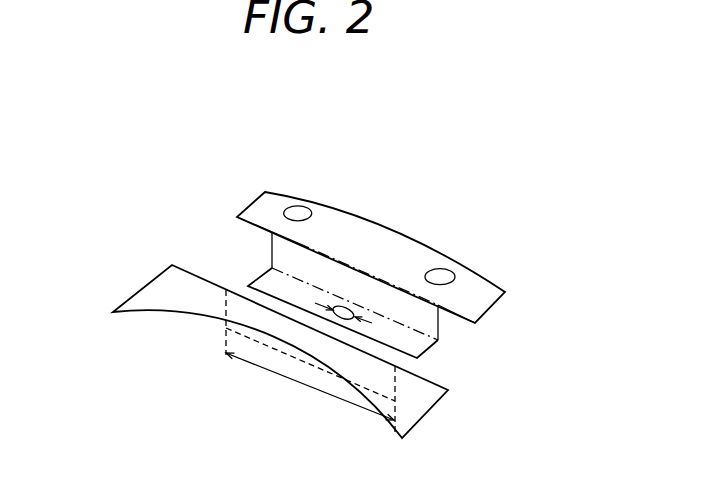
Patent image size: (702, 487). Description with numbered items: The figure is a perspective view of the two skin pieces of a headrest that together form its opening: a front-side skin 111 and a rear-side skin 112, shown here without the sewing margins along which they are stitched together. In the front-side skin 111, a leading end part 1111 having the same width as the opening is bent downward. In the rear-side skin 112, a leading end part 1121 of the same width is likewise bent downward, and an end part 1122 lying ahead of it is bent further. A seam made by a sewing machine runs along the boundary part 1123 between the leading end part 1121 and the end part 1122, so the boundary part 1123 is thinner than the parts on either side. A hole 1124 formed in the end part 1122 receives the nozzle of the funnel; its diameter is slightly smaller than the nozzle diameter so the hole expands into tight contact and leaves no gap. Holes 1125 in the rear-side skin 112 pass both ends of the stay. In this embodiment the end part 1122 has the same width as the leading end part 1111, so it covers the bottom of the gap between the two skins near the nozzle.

The front-side skin 111 is at (180, 357).
The leading end part 1111 is at (238, 310).
The rear-side skin 112 is at (405, 263).
The leading end part 1121 is at (438, 317).
The end part 1122 is at (438, 349).
The boundary part 1123 is at (303, 280).
The hole 1124 is at (347, 308).
The holes 1125 is at (292, 206).